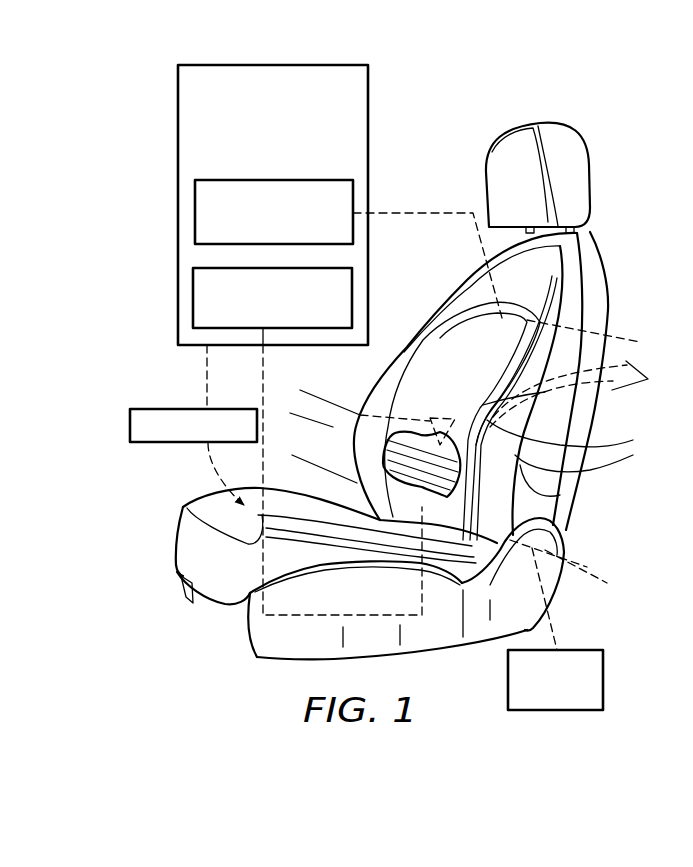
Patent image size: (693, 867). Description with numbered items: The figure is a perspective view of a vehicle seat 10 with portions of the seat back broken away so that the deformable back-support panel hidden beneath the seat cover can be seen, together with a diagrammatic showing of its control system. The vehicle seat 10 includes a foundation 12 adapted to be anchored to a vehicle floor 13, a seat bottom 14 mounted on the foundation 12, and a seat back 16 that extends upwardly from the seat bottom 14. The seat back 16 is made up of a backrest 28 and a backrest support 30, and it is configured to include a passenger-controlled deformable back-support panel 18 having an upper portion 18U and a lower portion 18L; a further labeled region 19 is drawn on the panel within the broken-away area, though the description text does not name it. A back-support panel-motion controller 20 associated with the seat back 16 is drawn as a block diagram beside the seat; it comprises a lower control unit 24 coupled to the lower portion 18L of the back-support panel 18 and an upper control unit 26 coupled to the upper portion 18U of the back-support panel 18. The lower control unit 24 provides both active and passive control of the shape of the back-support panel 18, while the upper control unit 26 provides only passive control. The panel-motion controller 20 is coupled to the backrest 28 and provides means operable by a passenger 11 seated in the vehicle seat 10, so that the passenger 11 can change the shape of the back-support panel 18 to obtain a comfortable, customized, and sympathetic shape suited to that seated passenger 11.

The vehicle seat 10 is at (608, 167).
The passenger 11 is at (182, 442).
The foundation 12 is at (192, 612).
The vehicle floor 13 is at (562, 712).
The seat bottom 14 is at (172, 517).
The seat back 16 is at (491, 450).
The deformable back-support panel 18 is at (526, 476).
The upper portion of back-support panel 18U is at (447, 370).
The lower portion of back-support panel 18L is at (458, 473).
The lumbar support section 19 is at (412, 462).
The back-support panel-motion controller 20 is at (306, 205).
The lower control unit 24 is at (352, 277).
The upper control unit 26 is at (353, 196).
The backrest 28 is at (468, 288).
The backrest support 30 is at (609, 326).